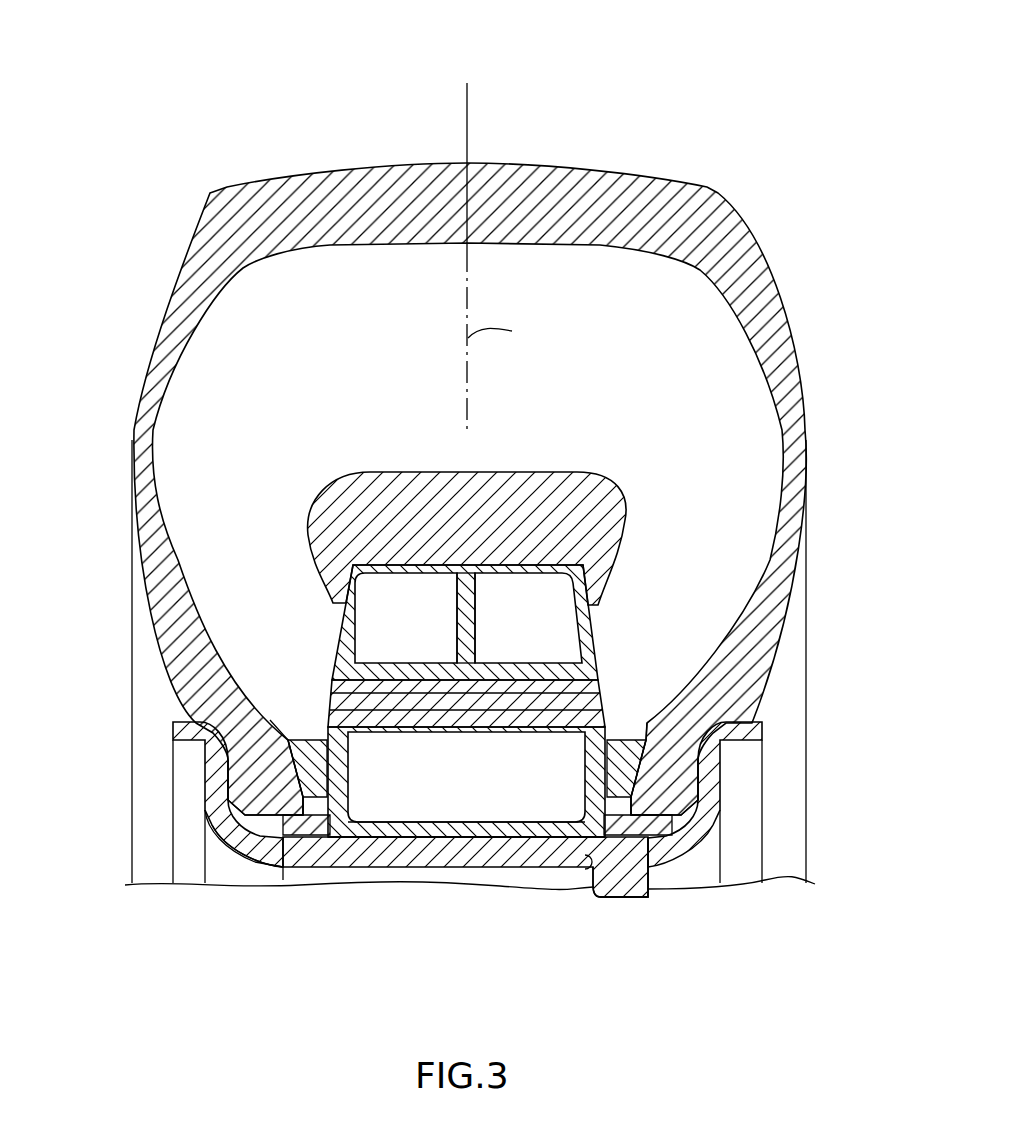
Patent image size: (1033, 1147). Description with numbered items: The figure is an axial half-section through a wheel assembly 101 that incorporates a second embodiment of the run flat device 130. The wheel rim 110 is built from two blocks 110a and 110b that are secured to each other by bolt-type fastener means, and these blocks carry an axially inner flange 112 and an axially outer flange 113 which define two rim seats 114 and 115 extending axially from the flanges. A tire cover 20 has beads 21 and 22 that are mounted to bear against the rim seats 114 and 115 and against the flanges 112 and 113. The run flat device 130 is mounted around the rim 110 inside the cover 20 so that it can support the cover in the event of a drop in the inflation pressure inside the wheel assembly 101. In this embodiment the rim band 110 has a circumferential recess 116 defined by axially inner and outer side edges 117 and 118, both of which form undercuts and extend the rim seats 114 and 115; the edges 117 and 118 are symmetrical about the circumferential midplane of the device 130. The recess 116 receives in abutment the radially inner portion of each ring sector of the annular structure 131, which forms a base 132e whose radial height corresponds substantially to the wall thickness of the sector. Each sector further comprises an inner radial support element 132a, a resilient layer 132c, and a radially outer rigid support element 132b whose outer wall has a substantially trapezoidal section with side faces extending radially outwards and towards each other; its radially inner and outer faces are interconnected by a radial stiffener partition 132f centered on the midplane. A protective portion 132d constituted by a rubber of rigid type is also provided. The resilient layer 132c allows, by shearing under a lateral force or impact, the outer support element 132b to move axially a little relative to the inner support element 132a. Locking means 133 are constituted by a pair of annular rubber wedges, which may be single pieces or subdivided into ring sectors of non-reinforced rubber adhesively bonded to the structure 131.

The wheel assembly 101 is at (465, 505).
The tire cover 20 is at (470, 489).
The bead 21 is at (241, 707).
The bead 22 is at (686, 737).
The run flat device 130 is at (451, 594).
The annular structure 131 is at (600, 632).
The inner radial support element 132a is at (355, 763).
The radially outer rigid support element 132b is at (333, 620).
The resilient layer 132c is at (330, 687).
The protective portion 132d is at (413, 503).
The base 132e is at (535, 822).
The radial stiffener partition 132f is at (475, 628).
The locking means 133 is at (318, 740).
The wheel rim 110 is at (383, 868).
The block 110a is at (245, 866).
The block 110b is at (655, 860).
The axially inner flange 112 is at (172, 722).
The axially outer flange 113 is at (762, 722).
The rim seat 114 is at (220, 840).
The rim seat 115 is at (672, 822).
The circumferential recess 116 is at (458, 868).
The axially inner side edge 117 is at (297, 860).
The axially outer side edge 118 is at (670, 836).